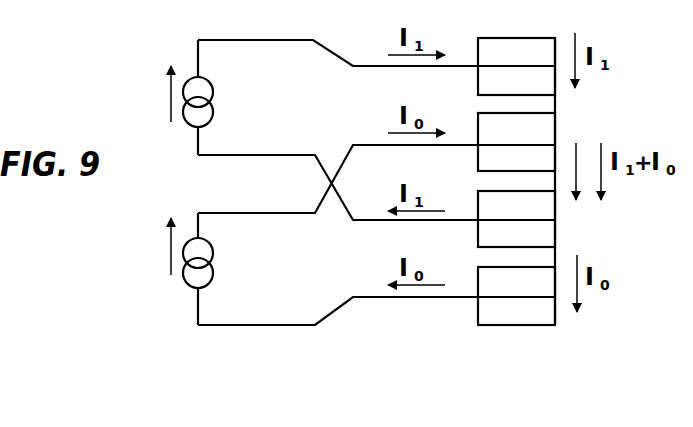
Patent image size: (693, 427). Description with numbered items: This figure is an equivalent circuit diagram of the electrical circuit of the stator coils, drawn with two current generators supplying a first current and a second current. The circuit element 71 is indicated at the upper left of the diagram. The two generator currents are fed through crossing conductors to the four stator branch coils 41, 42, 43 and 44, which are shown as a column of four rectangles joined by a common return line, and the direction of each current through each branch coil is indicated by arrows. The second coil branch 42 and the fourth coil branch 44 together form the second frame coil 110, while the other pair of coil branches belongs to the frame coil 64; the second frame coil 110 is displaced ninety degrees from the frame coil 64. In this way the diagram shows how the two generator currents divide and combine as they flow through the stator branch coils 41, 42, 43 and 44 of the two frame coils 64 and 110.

The current source circuit 71 is at (0, 25).
The second frame coil 110 is at (478, 194).
The frame coil 64 is at (478, 158).
The stator branch coil 41 is at (520, 47).
The second coil branch 42 is at (513, 120).
The stator branch coil 43 is at (523, 231).
The fourth coil branch 44 is at (542, 315).